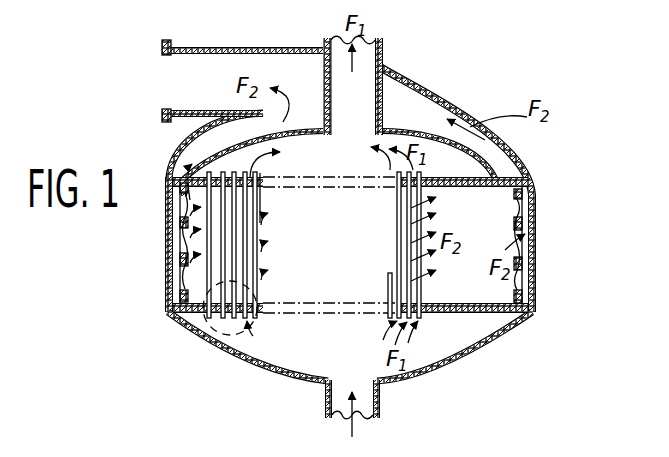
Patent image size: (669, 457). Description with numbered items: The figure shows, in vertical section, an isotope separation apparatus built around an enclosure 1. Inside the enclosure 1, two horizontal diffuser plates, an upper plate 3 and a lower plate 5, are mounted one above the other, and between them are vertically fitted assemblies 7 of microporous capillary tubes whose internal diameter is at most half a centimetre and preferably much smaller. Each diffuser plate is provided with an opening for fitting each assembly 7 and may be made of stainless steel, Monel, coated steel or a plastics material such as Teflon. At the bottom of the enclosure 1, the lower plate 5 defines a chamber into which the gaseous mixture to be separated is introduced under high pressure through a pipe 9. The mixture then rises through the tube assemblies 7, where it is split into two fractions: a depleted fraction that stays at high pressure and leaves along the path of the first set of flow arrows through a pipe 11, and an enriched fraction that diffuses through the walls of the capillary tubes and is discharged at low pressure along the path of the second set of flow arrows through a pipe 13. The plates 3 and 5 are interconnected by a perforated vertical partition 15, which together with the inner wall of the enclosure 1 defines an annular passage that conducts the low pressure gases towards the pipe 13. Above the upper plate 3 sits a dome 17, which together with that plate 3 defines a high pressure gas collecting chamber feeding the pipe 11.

The enclosure 1 is at (534, 270).
The upper diffuser plate 3 is at (490, 174).
The lower diffuser plate 5 is at (500, 312).
The assembly of microporous capillary tubes 7 is at (203, 324).
The pipe 9 is at (381, 407).
The pipe 11 is at (381, 53).
The pipe 13 is at (208, 48).
The perforated vertical partition 15 is at (522, 193).
The dome 17 is at (397, 128).